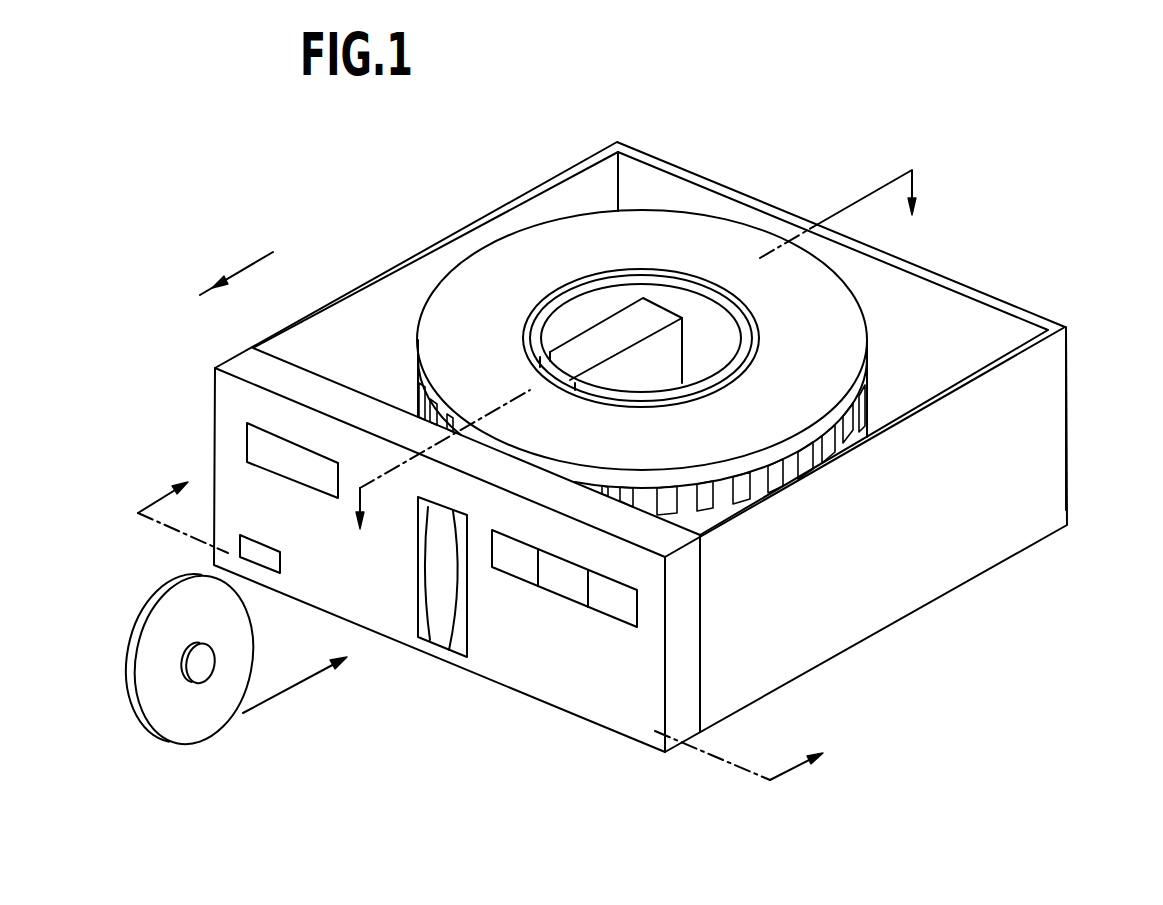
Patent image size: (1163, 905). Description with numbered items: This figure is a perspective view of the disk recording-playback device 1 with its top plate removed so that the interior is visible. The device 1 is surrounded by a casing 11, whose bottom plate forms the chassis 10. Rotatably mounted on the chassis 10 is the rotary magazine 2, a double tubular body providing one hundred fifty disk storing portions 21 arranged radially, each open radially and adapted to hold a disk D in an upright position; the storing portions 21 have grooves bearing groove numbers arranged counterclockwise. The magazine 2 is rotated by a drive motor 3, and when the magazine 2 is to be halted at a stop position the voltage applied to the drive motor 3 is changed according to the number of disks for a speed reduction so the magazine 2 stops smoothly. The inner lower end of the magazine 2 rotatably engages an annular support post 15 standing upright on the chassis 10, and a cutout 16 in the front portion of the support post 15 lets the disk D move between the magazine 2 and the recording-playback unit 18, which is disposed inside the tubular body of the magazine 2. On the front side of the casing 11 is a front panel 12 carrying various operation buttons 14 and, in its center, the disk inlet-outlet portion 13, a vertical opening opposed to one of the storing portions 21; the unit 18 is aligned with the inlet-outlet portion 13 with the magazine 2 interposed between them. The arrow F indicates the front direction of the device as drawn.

The disk recording-playback device 1 is at (783, 182).
The rotary magazine 2 is at (845, 332).
The drive motor 3 is at (487, 632).
The chassis 10 is at (883, 627).
The casing 11 is at (1033, 400).
The front panel 12 is at (547, 663).
The disk inlet-outlet portion 13 is at (435, 610).
The operation buttons 14 is at (615, 600).
The annular support post 15 is at (740, 327).
The cutout 16 is at (557, 362).
The recording-playback unit 18 is at (647, 310).
The disk storing portions 21 is at (743, 490).
The disk D is at (197, 718).
The front direction F is at (236, 258).